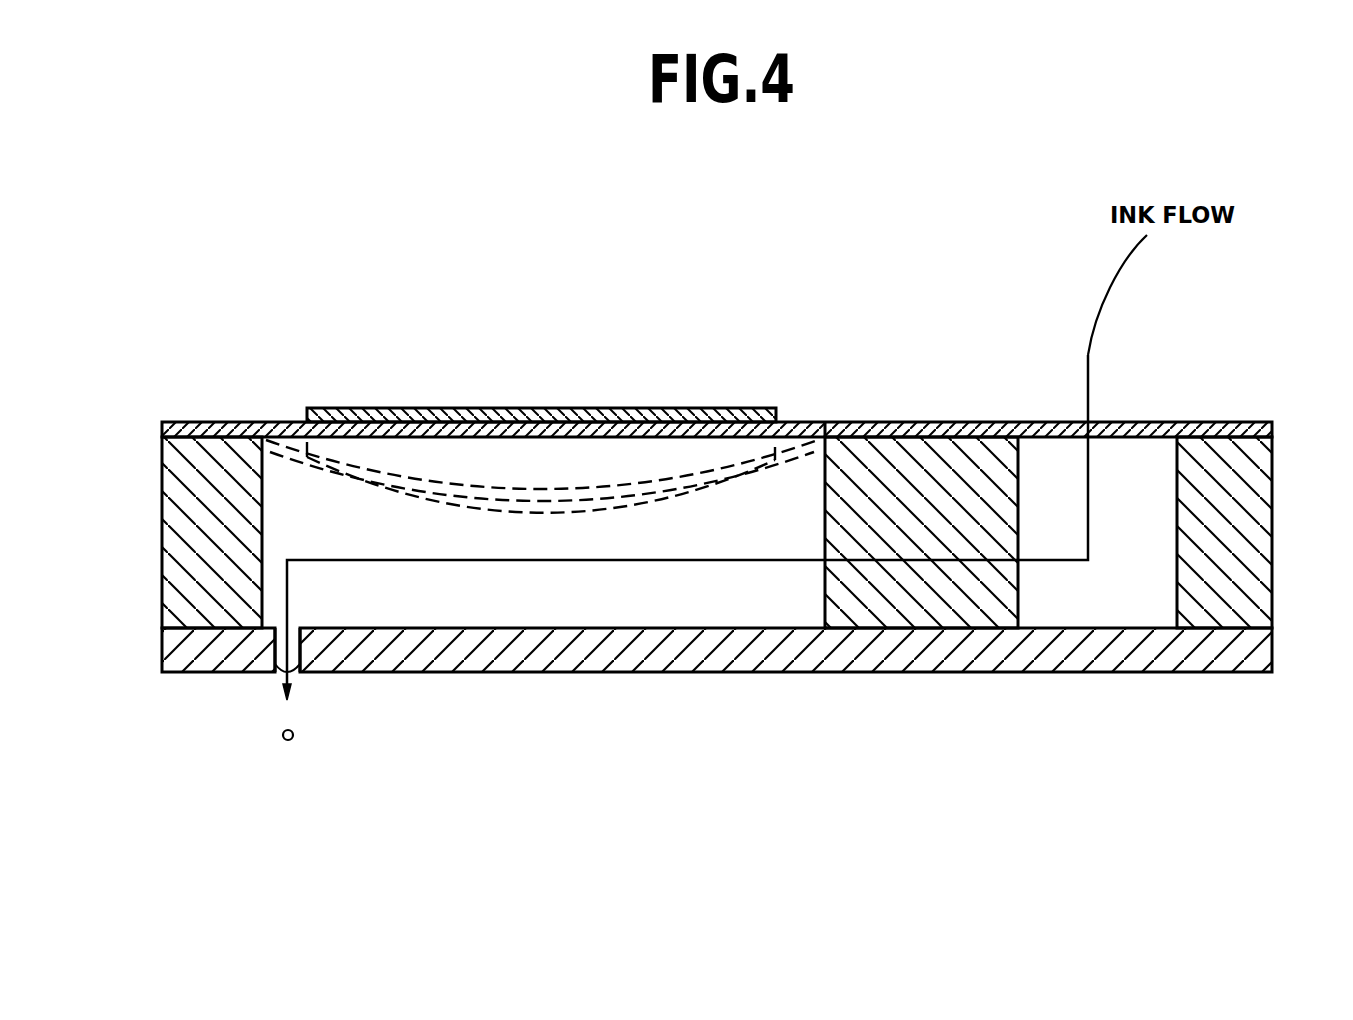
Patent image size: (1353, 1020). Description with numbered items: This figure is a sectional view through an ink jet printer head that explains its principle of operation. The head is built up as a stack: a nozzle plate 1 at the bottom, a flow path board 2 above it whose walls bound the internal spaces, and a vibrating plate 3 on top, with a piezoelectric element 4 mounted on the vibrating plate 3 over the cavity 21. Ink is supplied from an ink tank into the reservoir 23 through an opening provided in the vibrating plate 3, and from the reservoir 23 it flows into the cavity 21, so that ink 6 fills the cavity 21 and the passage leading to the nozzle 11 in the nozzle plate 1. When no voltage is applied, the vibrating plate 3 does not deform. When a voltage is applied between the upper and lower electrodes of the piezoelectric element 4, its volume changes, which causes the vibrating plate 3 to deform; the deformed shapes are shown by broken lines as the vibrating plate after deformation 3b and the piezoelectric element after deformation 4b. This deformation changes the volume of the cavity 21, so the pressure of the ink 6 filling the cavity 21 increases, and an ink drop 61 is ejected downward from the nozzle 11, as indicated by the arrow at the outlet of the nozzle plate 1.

The nozzle plate 1 is at (548, 645).
The flow path board 2 is at (915, 421).
The vibrating plate 3 is at (415, 412).
The piezoelectric element 4 is at (350, 410).
The ink 6 is at (402, 608).
The nozzle 11 is at (293, 663).
The cavity 21 is at (518, 523).
The reservoir 23 is at (1132, 500).
The ink drop 61 is at (292, 742).
The vibrating plate after deformation 3b is at (662, 497).
The piezoelectric element after deformation 4b is at (566, 485).